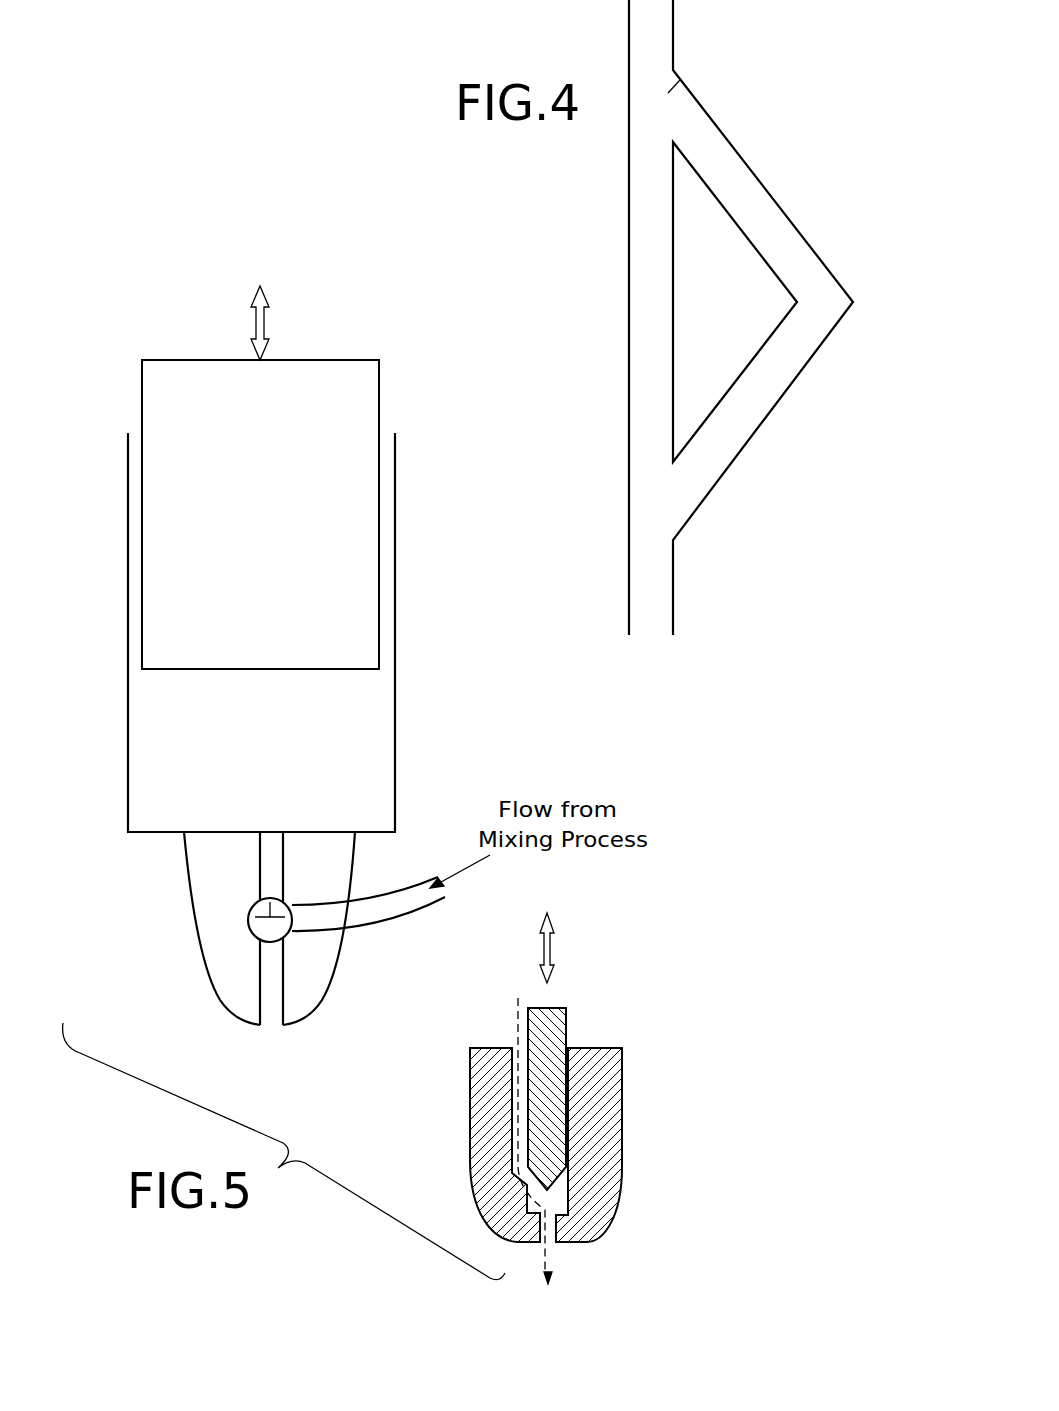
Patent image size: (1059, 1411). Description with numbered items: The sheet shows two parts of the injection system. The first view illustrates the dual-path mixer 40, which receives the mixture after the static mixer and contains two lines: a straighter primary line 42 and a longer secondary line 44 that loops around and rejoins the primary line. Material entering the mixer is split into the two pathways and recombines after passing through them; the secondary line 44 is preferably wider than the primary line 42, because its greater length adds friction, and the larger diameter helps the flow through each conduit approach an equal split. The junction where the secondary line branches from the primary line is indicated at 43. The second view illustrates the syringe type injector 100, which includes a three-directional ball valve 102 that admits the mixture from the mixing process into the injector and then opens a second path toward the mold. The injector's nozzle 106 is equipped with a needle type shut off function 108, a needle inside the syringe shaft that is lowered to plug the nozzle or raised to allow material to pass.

In FIG. 4, the dual-path mixer 40 is at (696, 317).
In FIG. 4, the primary line 42 is at (645, 333).
In FIG. 4, the hinge junction 43 is at (668, 93).
In FIG. 4, the secondary line 44 is at (750, 407).
In FIG. 5, the syringe type injector 100 is at (227, 655).
In FIG. 5, the three-directional ball valve 102 is at (202, 933).
In FIG. 5, the nozzle 106 is at (332, 998).
In FIG. 5, the needle type shut off function 108 is at (566, 1025).